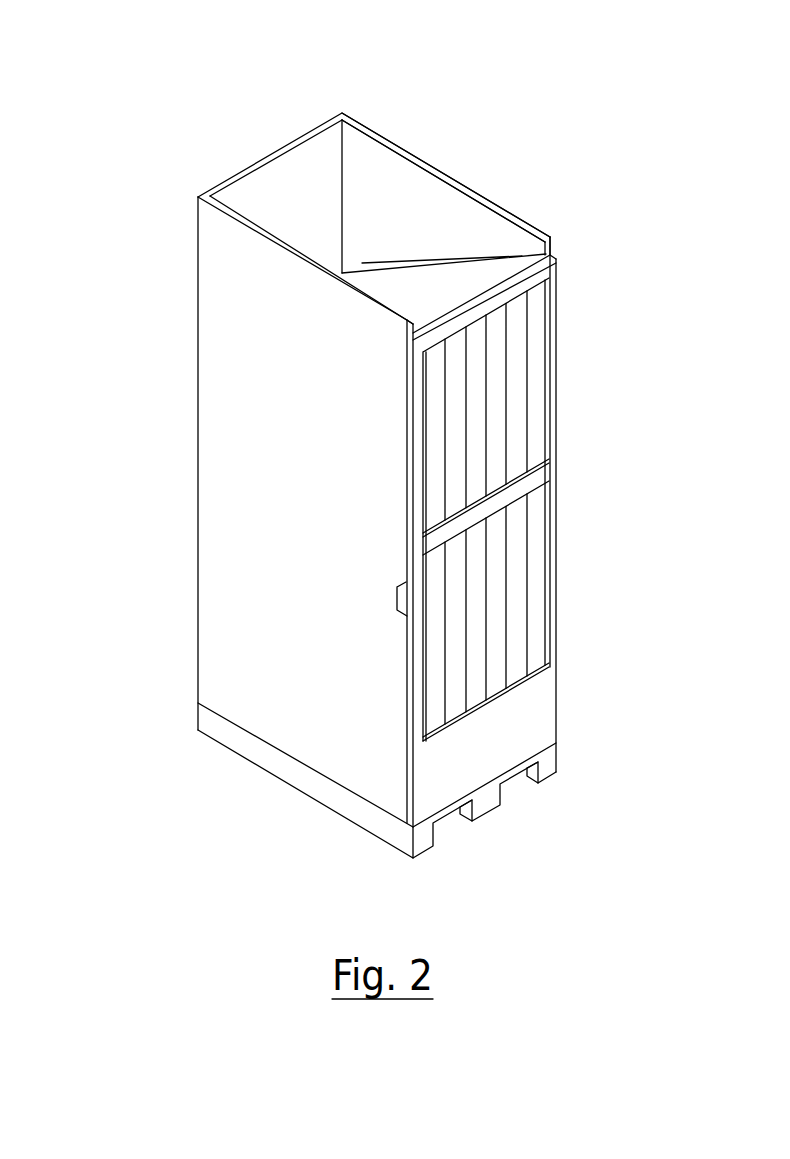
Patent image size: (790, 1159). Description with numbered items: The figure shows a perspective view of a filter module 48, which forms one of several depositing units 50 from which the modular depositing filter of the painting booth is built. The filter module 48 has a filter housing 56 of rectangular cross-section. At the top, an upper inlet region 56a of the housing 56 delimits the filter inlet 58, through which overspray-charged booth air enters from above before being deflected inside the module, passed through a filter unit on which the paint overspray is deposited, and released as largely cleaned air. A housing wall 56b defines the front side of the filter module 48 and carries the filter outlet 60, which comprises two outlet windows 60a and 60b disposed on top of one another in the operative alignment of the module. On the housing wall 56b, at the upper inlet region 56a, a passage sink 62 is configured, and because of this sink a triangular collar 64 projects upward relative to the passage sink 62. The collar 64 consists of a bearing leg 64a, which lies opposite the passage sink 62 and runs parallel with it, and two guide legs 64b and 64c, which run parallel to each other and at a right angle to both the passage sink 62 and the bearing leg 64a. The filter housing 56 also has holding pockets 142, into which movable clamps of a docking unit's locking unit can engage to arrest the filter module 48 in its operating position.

The filter module 48 is at (213, 449).
The depositing unit 50 is at (222, 527).
The filter housing 56 is at (195, 330).
The upper inlet region 56a is at (220, 230).
The housing wall 56b is at (553, 262).
The filter inlet 58 is at (423, 182).
The filter outlet 60 is at (570, 476).
The outlet window 60a is at (537, 597).
The outlet window 60b is at (537, 398).
The passage sink 62 is at (533, 261).
The collar 64 is at (308, 131).
The bearing leg 64a is at (260, 162).
The guide leg 64b is at (368, 148).
The guide leg 64c is at (280, 282).
The holding pocket 142 is at (405, 615).